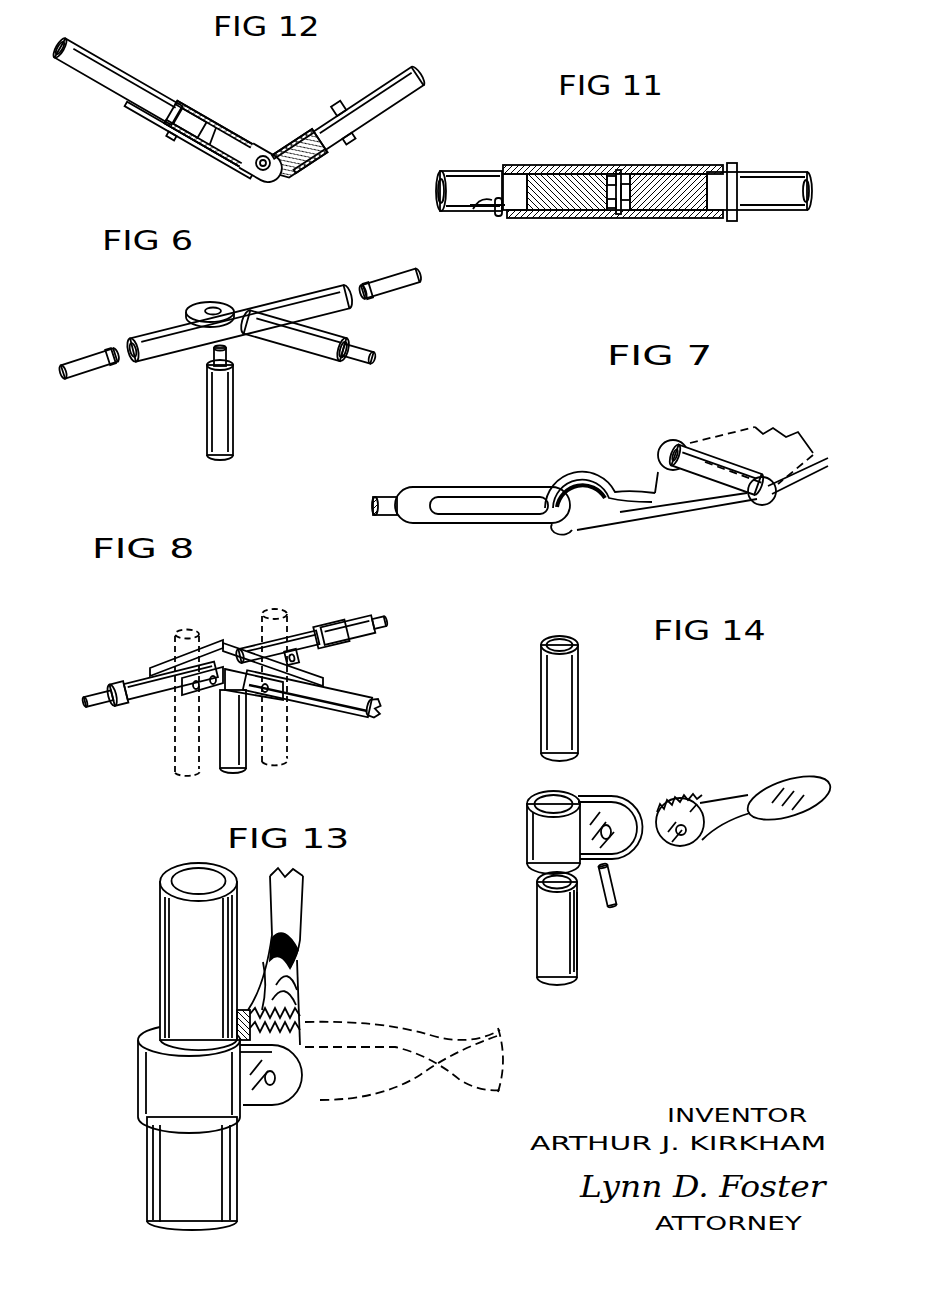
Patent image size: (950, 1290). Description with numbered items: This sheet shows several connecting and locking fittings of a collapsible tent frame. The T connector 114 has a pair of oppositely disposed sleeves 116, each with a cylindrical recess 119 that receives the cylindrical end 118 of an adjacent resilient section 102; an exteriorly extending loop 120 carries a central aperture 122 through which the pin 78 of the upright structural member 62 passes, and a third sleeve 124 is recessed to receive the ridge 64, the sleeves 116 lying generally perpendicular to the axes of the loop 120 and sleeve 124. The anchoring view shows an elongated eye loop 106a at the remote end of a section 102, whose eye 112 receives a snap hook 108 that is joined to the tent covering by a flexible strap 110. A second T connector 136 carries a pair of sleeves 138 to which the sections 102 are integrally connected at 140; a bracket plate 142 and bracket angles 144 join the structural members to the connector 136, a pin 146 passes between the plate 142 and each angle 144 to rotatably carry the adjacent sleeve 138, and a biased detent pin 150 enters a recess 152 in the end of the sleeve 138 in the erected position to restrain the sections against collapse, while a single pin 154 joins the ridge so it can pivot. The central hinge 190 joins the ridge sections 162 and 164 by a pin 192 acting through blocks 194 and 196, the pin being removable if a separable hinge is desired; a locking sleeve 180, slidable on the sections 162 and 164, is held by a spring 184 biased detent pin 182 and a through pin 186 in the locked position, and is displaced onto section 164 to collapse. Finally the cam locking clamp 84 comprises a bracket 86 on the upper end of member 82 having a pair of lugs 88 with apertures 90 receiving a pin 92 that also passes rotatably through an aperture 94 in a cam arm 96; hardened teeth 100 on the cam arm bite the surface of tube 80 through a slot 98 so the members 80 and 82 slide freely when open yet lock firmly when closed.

In FIG. 6, the upright structural member 62 is at (213, 393).
In FIG. 6, the ridge structural member 64 is at (362, 346).
In FIG. 8, the ridge structural member 64 is at (378, 708).
In FIG. 6, the pin 78 is at (227, 356).
In FIG. 14, the tube member 80 is at (582, 699).
In FIG. 13, the tube member 80 is at (158, 943).
In FIG. 14, the lower member 82 is at (547, 942).
In FIG. 13, the lower member 82 is at (185, 1158).
In FIG. 14, the cam locking clamp 84 is at (675, 789).
In FIG. 13, the cam locking clamp 84 is at (307, 928).
In FIG. 14, the bracket 86 is at (527, 836).
In FIG. 14, the lugs 88 is at (603, 796).
In FIG. 13, the lugs 88 is at (260, 1108).
In FIG. 14, the aperture 90 is at (608, 836).
In FIG. 14, the pin 92 is at (618, 897).
In FIG. 13, the pin 92 is at (278, 1084).
In FIG. 14, the aperture 94 is at (682, 838).
In FIG. 14, the cam arm 96 is at (763, 828).
In FIG. 14, the slot 98 is at (580, 900).
In FIG. 14, the teeth 100 is at (690, 803).
In FIG. 6, the resilient section 102 is at (60, 365).
In FIG. 7, the resilient section 102 is at (397, 493).
In FIG. 8, the resilient section 102 is at (85, 705).
In FIG. 7, the elongated eye loop 106a is at (487, 520).
In FIG. 7, the snap hook 108 is at (594, 471).
In FIG. 7, the flexible strap 110 is at (730, 437).
In FIG. 7, the eye 112 is at (468, 503).
In FIG. 6, the T connector 114 is at (243, 300).
In FIG. 6, the sleeves 116 is at (316, 296).
In FIG. 6, the cylindrical end 118 is at (113, 366).
In FIG. 6, the cylindrical recess 119 is at (130, 347).
In FIG. 6, the loop 120 is at (193, 306).
In FIG. 6, the central aperture 122 is at (216, 305).
In FIG. 6, the third sleeve 124 is at (312, 352).
In FIG. 8, the T connector 136 is at (232, 634).
In FIG. 8, the sleeves 138 is at (323, 630).
In FIG. 8, the connection 140 is at (115, 688).
In FIG. 8, the bracket plate 142 is at (148, 666).
In FIG. 8, the bracket angles 144 is at (320, 675).
In FIG. 8, the pin 146 is at (287, 652).
In FIG. 8, the detent pin 150 is at (276, 655).
In FIG. 8, the recess 152 is at (268, 600).
In FIG. 8, the pin 154 is at (262, 757).
In FIG. 12, the ridge section 162 is at (72, 44).
In FIG. 11, the ridge section 162 is at (462, 170).
In FIG. 12, the ridge section 164 is at (387, 96).
In FIG. 11, the ridge section 164 is at (773, 176).
In FIG. 12, the locking sleeve 180 is at (128, 75).
In FIG. 11, the locking sleeve 180 is at (597, 167).
In FIG. 12, the detent pin 182 is at (175, 133).
In FIG. 11, the detent pin 182 is at (498, 220).
In FIG. 11, the spring 184 is at (471, 215).
In FIG. 12, the through pin 186 is at (338, 97).
In FIG. 11, the through pin 186 is at (727, 220).
In FIG. 12, the central hinge 190 is at (226, 117).
In FIG. 11, the central hinge 190 is at (562, 150).
In FIG. 12, the pin 192 is at (266, 172).
In FIG. 11, the pin 192 is at (627, 175).
In FIG. 12, the block 194 is at (250, 173).
In FIG. 11, the block 194 is at (587, 210).
In FIG. 12, the block 196 is at (290, 170).
In FIG. 11, the block 196 is at (650, 210).